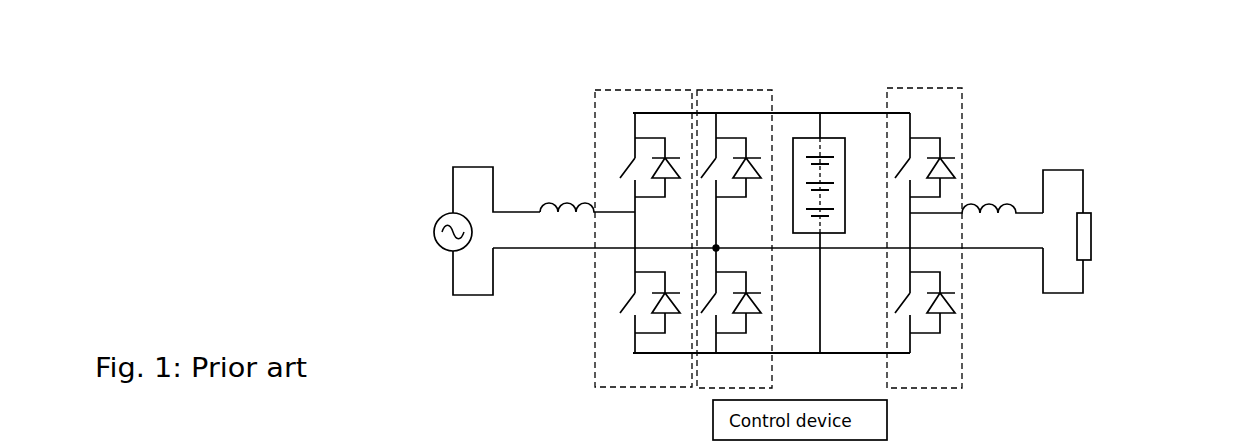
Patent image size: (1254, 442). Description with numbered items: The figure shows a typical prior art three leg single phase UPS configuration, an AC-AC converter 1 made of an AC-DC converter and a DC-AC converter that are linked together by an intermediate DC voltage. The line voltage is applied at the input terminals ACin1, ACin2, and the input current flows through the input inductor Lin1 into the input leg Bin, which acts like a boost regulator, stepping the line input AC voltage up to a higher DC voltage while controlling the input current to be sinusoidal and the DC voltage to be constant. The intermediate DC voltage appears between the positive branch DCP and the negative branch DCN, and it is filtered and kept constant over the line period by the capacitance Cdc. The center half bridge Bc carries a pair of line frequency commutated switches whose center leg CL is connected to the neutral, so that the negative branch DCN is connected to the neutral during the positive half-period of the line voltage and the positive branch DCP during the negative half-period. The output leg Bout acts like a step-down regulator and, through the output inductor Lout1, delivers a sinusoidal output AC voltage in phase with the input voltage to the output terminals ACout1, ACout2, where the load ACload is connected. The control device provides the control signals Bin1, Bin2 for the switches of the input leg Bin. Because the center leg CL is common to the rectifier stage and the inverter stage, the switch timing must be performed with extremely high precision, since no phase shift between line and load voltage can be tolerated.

The AC-AC converter 1 is at (512, 96).
The AC input terminal ACin1 is at (487, 190).
The AC input terminal ACin2 is at (466, 291).
The input inductor Lin1 is at (587, 192).
The input leg Bin is at (668, 89).
The center half bridge Bc is at (747, 89).
The center leg CL is at (729, 238).
The positive branch of the intermediate DC voltage DCP is at (771, 96).
The negative branch of the intermediate DC voltage DCN is at (771, 367).
The DC link capacitance Cdc is at (827, 233).
The output leg Bout is at (945, 88).
The output inductor Lout1 is at (976, 193).
The AC output terminal ACout1 is at (1066, 174).
The AC output terminal ACout2 is at (1050, 290).
The AC load ACload is at (1131, 236).
The control signal for the input leg switch Bin1 is at (562, 439).
The control signal for the input leg switch Bin2 is at (656, 439).